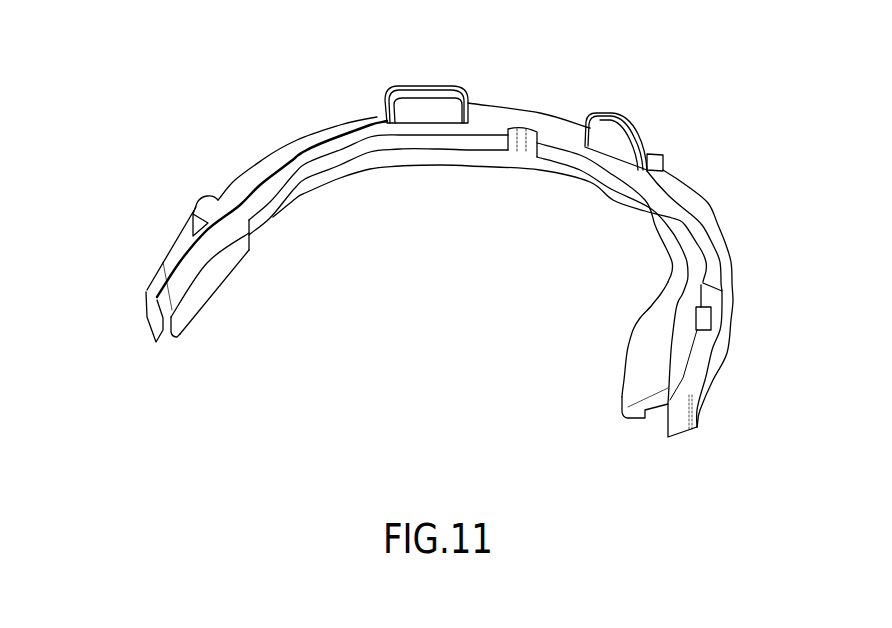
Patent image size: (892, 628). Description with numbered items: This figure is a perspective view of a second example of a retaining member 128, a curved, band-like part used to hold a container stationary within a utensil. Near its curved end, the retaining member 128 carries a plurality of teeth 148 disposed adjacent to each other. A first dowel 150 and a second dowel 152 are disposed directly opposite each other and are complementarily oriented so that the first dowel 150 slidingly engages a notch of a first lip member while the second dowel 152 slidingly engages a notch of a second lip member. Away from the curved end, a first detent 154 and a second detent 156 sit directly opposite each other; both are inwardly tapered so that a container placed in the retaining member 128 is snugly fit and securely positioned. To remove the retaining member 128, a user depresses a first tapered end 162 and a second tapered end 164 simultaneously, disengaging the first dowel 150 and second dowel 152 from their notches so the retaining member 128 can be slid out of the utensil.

The retaining member 128 is at (373, 428).
The teeth 148 is at (405, 103).
The first dowel 150 is at (707, 312).
The second dowel 152 is at (203, 200).
The first detent 154 is at (626, 357).
The second detent 156 is at (212, 294).
The first tapered end 162 is at (677, 425).
The second tapered end 164 is at (146, 323).